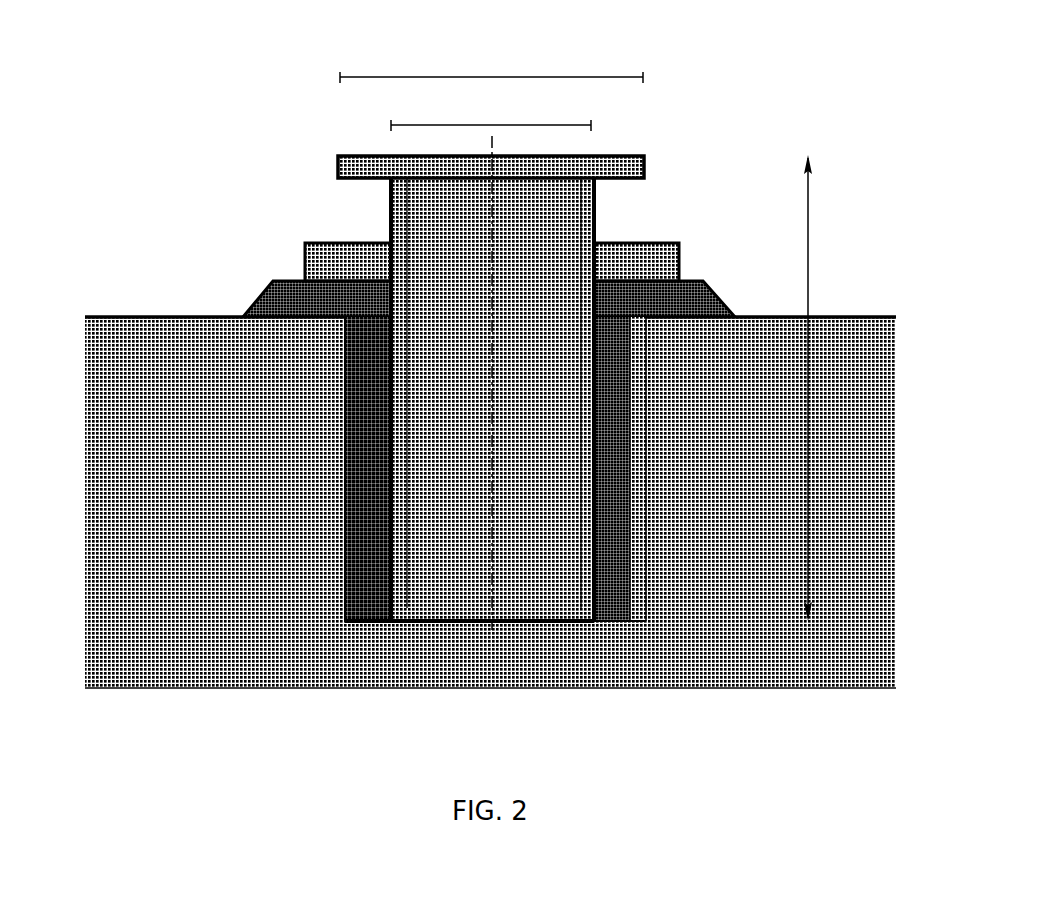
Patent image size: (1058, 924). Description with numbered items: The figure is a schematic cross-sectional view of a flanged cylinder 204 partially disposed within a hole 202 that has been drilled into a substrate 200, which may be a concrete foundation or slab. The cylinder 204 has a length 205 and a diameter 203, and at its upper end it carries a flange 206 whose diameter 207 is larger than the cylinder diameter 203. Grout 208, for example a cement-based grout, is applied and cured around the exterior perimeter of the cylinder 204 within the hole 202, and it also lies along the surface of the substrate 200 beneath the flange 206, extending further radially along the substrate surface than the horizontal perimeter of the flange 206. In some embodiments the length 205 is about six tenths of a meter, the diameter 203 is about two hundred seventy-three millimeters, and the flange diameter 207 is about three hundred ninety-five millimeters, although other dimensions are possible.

The substrate 200 is at (763, 306).
The hole 202 is at (639, 462).
The diameter 203 is at (484, 116).
The flanged cylinder 204 is at (553, 195).
The length 205 is at (802, 376).
The flange 206 is at (330, 157).
The diameter 207 is at (413, 67).
The grout 208 is at (336, 441).